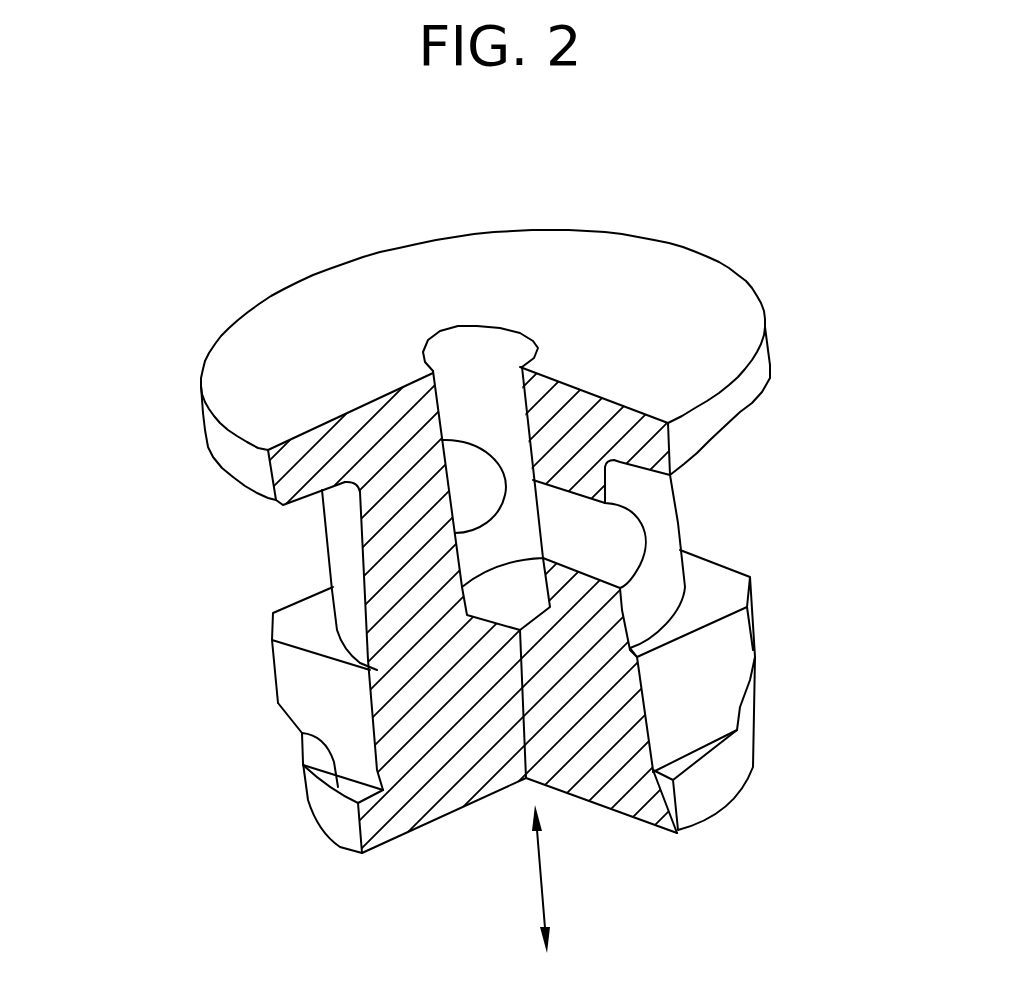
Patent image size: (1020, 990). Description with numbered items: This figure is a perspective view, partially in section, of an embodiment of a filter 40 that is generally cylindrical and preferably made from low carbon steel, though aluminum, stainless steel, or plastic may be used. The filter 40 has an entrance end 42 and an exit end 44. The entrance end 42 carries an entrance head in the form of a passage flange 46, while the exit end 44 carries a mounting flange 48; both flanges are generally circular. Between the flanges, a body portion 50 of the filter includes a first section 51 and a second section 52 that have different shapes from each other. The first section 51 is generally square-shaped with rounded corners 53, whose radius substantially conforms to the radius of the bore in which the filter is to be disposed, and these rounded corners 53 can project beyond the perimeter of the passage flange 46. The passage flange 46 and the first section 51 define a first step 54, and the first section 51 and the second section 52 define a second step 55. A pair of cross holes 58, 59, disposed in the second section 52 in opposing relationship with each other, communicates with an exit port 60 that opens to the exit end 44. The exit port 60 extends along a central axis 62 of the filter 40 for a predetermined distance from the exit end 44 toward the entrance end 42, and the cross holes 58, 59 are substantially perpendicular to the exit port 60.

The filter 40 is at (138, 359).
The entrance end 42 is at (627, 813).
The exit end 44 is at (359, 300).
The passage flange 46 is at (725, 787).
The mounting flange 48 is at (751, 383).
The body portion 50 is at (724, 533).
The first section 51 is at (693, 680).
The second section 52 is at (650, 490).
The rounded corners 53 is at (757, 620).
The first step 54 is at (302, 733).
The second step 55 is at (308, 618).
The cross hole 58 is at (617, 530).
The cross hole 59 is at (472, 480).
The exit port 60 is at (500, 350).
The central axis 62 is at (521, 879).